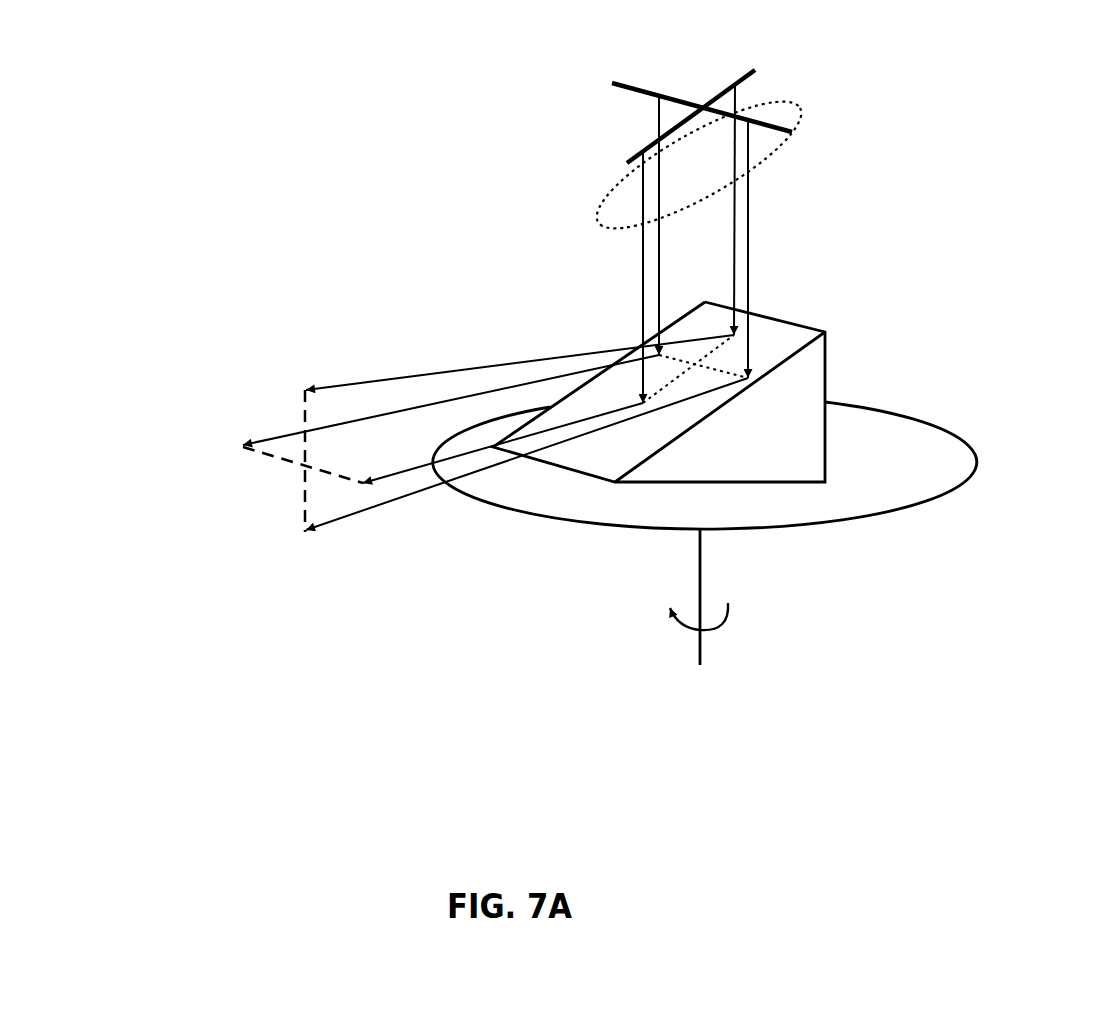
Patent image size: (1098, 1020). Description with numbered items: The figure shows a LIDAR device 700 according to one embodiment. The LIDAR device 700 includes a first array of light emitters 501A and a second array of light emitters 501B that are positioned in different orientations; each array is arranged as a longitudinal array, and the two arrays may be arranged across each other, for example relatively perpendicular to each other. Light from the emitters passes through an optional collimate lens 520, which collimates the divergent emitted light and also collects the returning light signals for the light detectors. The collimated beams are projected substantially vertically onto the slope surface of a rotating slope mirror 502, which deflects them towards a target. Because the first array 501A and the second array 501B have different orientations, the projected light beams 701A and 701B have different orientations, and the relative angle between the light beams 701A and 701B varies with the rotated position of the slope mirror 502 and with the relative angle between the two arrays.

The LIDAR device 700 is at (958, 188).
The first array of light emitters 501A is at (775, 123).
The second array of light emitters 501B is at (747, 74).
The collimate lens 520 is at (596, 222).
The slope mirror 502 is at (793, 466).
The light beam 701A is at (307, 533).
The light beam 701B is at (238, 443).